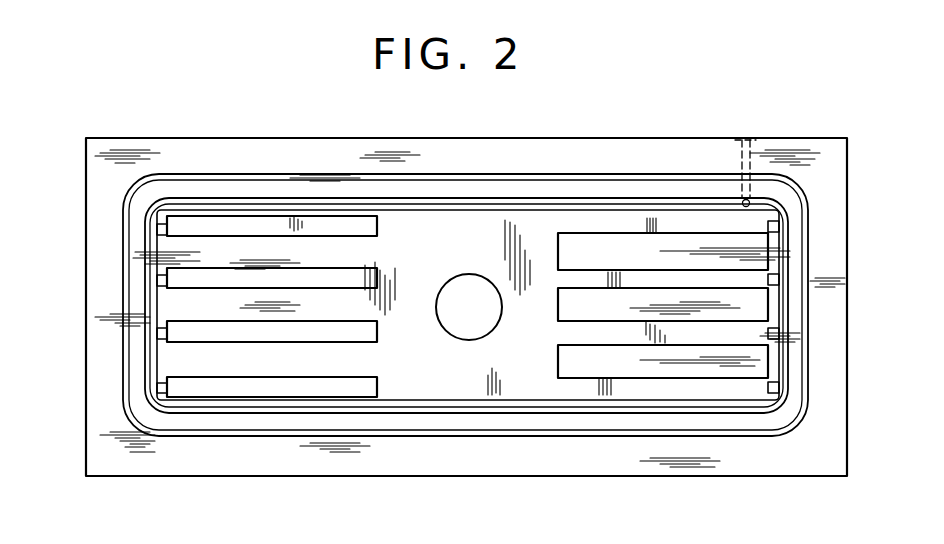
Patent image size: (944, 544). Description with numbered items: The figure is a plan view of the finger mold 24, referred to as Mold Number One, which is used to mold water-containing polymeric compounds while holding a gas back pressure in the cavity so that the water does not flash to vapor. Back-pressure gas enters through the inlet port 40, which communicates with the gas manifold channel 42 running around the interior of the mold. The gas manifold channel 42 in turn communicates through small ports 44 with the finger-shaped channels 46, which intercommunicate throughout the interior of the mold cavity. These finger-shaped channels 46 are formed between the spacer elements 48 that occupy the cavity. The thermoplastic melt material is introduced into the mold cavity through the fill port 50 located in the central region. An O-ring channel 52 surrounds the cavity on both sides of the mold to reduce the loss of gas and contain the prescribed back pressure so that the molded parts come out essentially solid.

The finger mold 24 is at (334, 137).
The inlet port 40 is at (742, 162).
The gas manifold channel 42 is at (228, 202).
The ports 44 is at (160, 232).
The finger-shaped channels 46 is at (286, 344).
The spacer elements 48 is at (672, 260).
The fill port 50 is at (450, 333).
The O-ring channel 52 is at (435, 434).